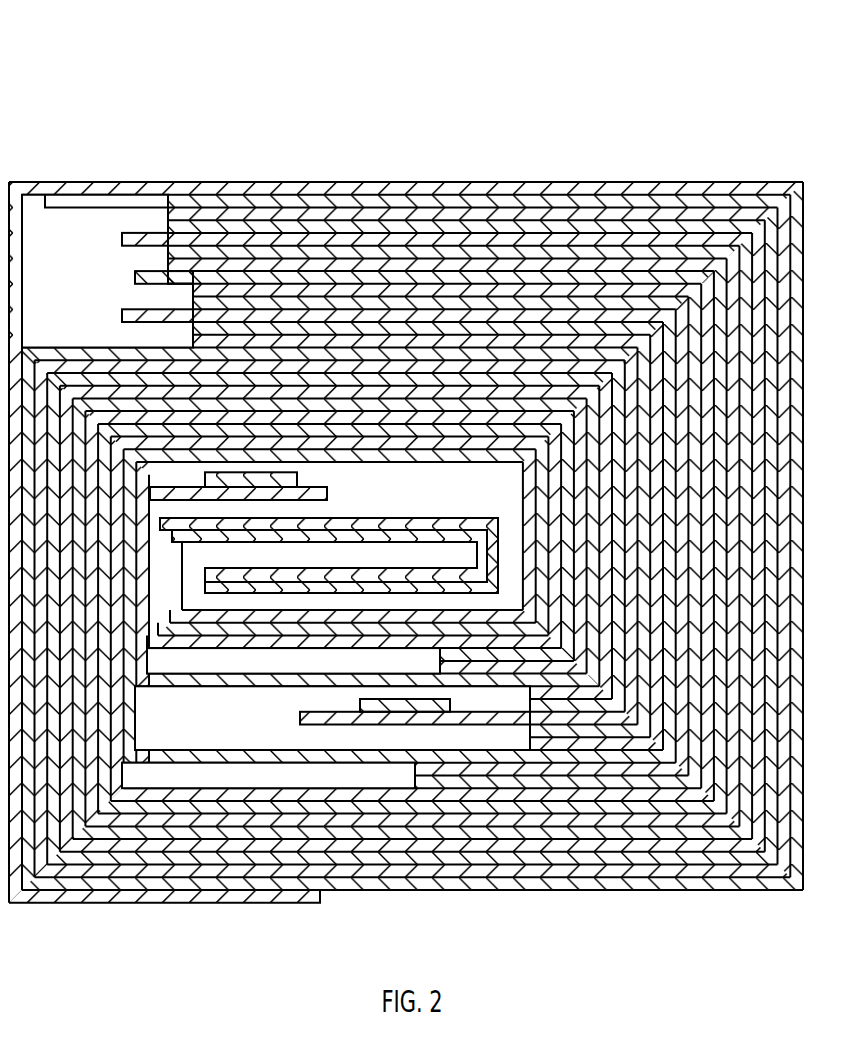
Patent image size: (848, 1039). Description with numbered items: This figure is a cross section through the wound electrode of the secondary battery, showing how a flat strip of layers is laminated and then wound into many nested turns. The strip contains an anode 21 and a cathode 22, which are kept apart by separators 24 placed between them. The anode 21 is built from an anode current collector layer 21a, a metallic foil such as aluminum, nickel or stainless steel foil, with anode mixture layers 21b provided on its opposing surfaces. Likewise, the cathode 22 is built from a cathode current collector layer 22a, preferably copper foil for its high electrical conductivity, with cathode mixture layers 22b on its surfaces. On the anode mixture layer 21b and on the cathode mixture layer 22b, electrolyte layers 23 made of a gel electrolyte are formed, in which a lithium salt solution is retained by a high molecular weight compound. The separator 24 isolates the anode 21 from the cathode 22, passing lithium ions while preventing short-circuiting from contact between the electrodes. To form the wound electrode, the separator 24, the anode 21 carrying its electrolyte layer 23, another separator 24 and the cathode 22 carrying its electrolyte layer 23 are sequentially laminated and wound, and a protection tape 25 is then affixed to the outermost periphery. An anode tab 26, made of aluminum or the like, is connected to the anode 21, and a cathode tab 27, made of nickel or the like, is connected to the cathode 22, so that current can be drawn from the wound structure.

The anode 21 is at (358, 70).
The anode current collector layer 21a is at (377, 272).
The anode mixture layer 21b is at (510, 290).
The cathode 22 is at (146, 70).
The cathode current collector layer 22a is at (172, 205).
The cathode mixture layer 22b is at (290, 345).
The electrolyte layer 23 is at (628, 330).
The separator 24 is at (740, 245).
The protection tape 25 is at (42, 182).
The anode tab 26 is at (232, 480).
The cathode tab 27 is at (396, 703).